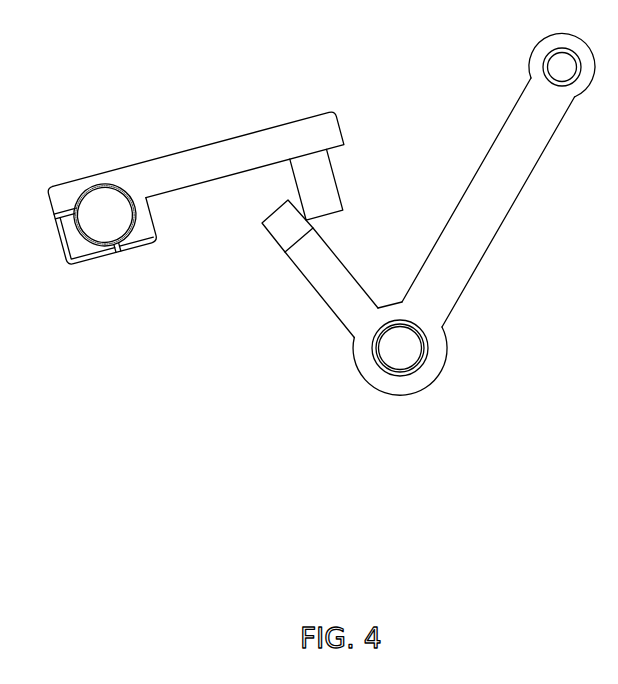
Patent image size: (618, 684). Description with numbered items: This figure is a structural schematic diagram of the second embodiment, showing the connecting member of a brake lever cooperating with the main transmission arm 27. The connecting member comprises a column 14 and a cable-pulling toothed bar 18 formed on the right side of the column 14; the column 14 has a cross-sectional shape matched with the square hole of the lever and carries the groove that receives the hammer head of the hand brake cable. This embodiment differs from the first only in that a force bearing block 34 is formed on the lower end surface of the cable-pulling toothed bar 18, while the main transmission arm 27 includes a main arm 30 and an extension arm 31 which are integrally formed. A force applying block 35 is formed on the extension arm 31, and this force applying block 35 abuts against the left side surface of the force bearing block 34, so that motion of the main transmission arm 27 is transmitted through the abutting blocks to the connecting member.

The column 14 is at (82, 178).
The cable-pulling toothed bar 18 is at (252, 152).
The main transmission arm 27 is at (462, 338).
The main arm 30 is at (493, 233).
The extension arm 31 is at (332, 314).
The force bearing block 34 is at (338, 190).
The force applying block 35 is at (278, 228).